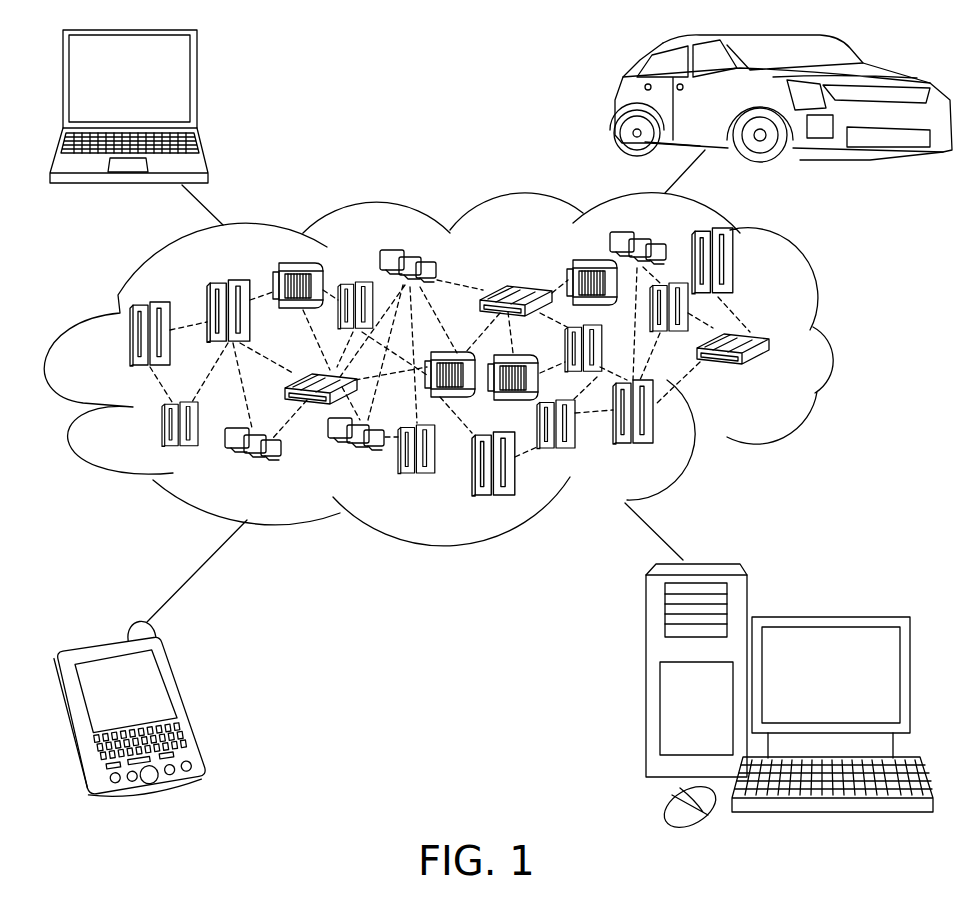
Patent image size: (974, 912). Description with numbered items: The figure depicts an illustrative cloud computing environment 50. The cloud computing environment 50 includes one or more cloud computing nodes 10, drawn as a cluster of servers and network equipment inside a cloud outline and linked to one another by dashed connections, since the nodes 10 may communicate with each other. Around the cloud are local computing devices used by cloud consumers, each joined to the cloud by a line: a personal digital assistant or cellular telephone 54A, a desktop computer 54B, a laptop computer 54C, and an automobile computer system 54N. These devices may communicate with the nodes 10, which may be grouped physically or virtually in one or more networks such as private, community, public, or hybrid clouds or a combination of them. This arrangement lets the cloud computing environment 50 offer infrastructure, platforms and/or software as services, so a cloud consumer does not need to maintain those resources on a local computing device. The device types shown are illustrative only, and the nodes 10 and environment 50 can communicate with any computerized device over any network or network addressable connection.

The cloud computing node 10 is at (780, 374).
The cloud computing environment 50 is at (828, 343).
The personal digital assistant or cellular telephone 54A is at (187, 703).
The desktop computer 54B is at (828, 615).
The laptop computer 54C is at (195, 85).
The automobile computer system 54N is at (618, 103).